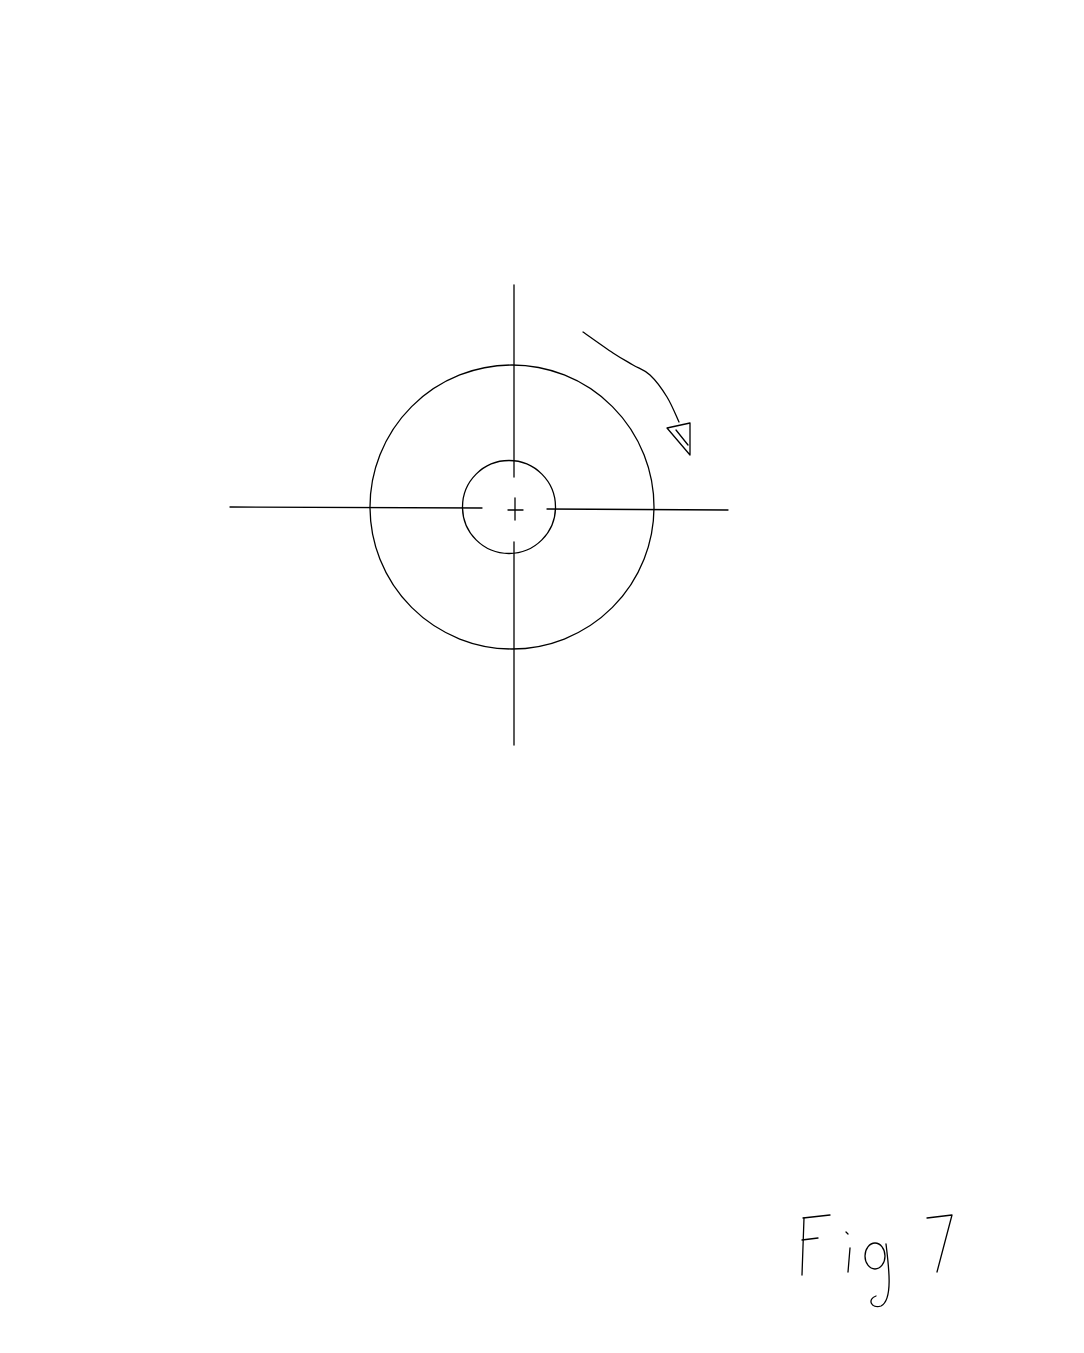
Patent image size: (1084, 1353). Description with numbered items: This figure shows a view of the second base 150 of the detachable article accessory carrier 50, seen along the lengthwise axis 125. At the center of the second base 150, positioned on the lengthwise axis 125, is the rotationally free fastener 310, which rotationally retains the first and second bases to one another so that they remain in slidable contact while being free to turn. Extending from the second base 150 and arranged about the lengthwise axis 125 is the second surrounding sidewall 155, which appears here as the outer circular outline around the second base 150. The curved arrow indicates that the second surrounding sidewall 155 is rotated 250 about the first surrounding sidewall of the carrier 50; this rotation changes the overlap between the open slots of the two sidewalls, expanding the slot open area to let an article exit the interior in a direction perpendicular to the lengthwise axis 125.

The detachable article accessory carrier 50 is at (878, 15).
The lengthwise axis 125 is at (513, 505).
The second base 150 is at (427, 570).
The second surrounding sidewall 155 is at (755, 780).
The rotated 250 is at (652, 373).
The rotationally free fastener 310 is at (467, 488).